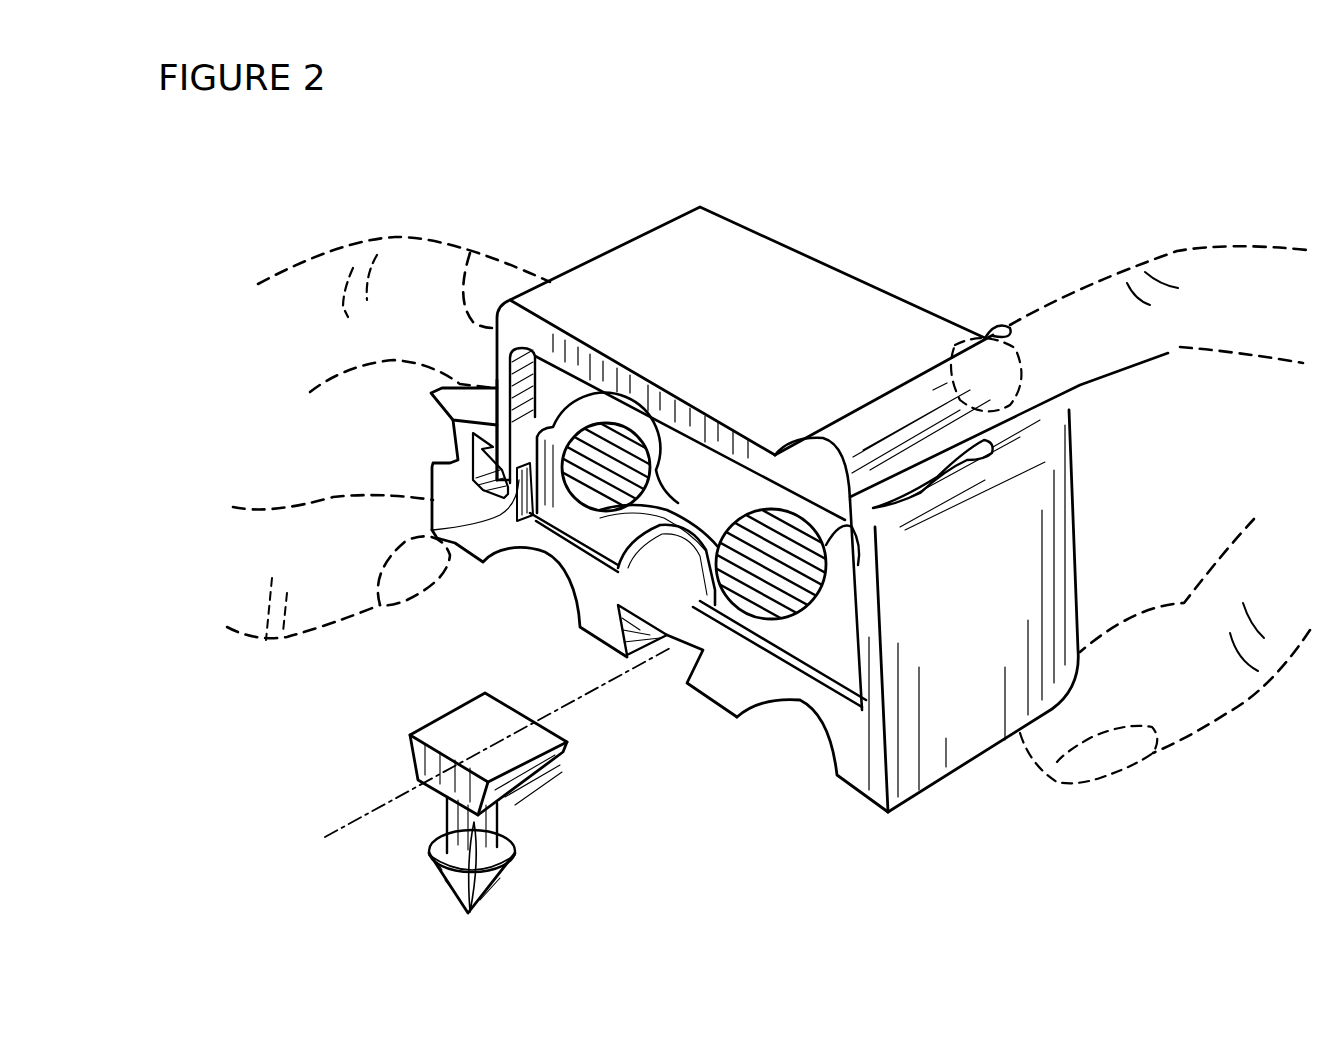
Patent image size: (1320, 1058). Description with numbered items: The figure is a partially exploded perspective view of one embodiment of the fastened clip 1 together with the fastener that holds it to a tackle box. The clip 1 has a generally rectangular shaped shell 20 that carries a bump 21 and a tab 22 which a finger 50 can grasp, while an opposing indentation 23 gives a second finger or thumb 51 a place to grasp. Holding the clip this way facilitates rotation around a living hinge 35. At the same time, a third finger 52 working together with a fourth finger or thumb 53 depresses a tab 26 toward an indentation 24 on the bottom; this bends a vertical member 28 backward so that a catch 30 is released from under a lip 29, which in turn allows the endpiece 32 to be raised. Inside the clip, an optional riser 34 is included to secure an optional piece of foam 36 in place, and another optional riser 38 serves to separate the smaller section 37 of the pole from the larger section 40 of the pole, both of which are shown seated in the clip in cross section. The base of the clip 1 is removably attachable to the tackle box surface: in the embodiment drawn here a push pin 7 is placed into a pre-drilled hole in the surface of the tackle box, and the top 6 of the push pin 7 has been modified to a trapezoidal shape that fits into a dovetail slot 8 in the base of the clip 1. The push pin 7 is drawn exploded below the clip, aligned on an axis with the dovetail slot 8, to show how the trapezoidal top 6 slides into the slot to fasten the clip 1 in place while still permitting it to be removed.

The fastened clip 1 is at (618, 160).
The top of the push pin 6 is at (500, 778).
The push pin 7 is at (450, 890).
The dovetail slot 8 is at (687, 663).
The shell 20 is at (780, 290).
The bump 21 is at (927, 397).
The tab 22 is at (1020, 430).
The indentation 23 is at (797, 720).
The indentation on the bottom 24 is at (508, 563).
The tab 26 is at (444, 388).
The vertical member 28 is at (453, 460).
The lip 29 is at (470, 433).
The catch 30 is at (495, 477).
The endpiece 32 is at (497, 353).
The riser 34 is at (433, 528).
The living hinge 35 is at (860, 568).
The piece of foam 36 is at (547, 530).
The smaller section of the pole 37 is at (600, 530).
The riser 38 is at (677, 573).
The larger section of the pole 40 is at (862, 605).
The finger 50 is at (1207, 280).
The second finger or thumb 51 is at (1193, 700).
The third finger 52 is at (303, 303).
The fourth finger or thumb 53 is at (247, 620).